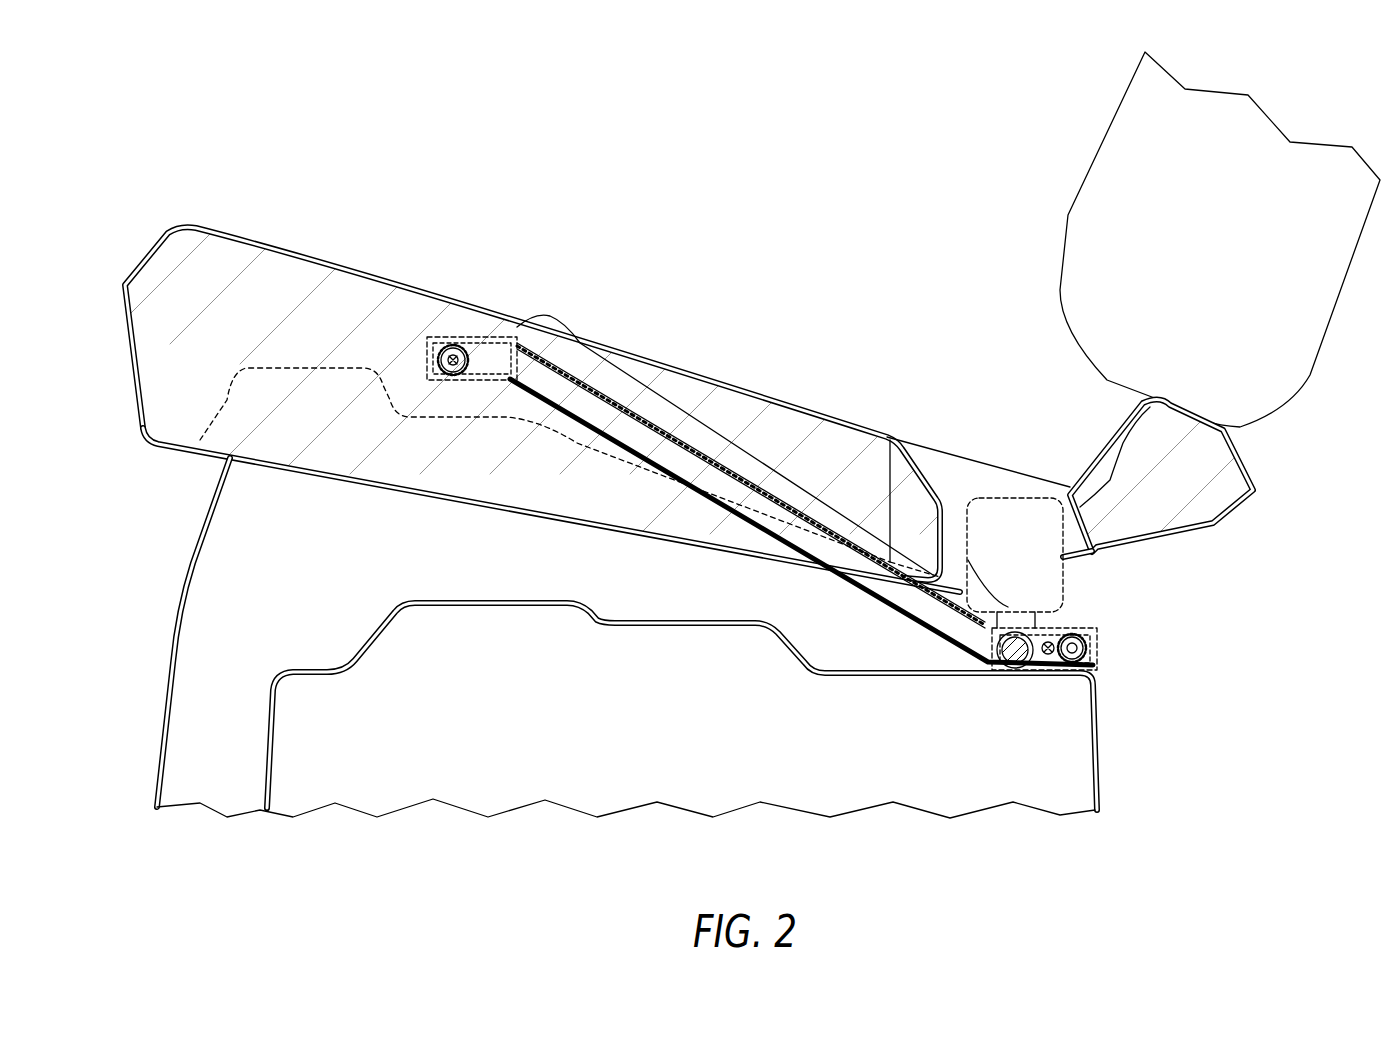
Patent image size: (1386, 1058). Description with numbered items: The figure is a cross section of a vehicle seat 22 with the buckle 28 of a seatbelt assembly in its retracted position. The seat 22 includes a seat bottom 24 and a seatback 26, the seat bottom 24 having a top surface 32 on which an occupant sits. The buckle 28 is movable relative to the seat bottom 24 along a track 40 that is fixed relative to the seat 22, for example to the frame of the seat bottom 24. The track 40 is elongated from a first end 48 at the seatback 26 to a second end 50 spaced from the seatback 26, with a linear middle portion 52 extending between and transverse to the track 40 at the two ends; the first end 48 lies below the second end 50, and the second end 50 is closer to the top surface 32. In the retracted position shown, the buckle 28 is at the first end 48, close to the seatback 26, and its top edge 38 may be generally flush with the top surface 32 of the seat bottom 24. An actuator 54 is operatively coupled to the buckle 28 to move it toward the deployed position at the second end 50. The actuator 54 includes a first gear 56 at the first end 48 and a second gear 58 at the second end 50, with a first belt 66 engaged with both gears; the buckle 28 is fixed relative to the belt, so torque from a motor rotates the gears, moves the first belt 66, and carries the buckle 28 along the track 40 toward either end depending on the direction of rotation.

The seat 22 is at (820, 212).
The seat bottom 24 is at (1105, 250).
The seatback 26 is at (183, 300).
The buckle 28 is at (1043, 587).
The top surface 32 is at (657, 340).
The top edge 38 is at (1010, 495).
The track 40 is at (672, 477).
The first end 48 is at (1097, 682).
The second end 50 is at (427, 335).
The middle portion 52 is at (733, 443).
The actuator 54 is at (1110, 691).
The first gear 56 is at (1120, 663).
The second gear 58 is at (453, 372).
The first belt 66 is at (565, 393).